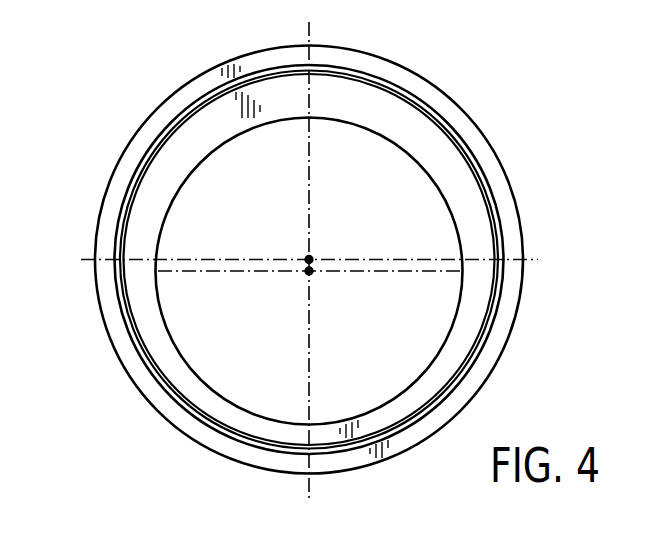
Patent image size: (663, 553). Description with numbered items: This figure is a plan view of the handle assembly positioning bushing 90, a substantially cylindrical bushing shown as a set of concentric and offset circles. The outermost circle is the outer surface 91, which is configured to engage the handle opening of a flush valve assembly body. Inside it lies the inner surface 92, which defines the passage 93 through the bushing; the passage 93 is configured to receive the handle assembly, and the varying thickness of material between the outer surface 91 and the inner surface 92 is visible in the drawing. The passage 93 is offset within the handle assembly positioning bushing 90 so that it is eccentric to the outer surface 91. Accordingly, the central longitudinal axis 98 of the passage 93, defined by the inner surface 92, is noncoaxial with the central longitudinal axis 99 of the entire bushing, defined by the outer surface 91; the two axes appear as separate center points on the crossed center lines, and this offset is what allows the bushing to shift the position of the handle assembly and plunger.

The handle assembly positioning bushing 90 is at (63, 390).
The outer surface 91 is at (208, 68).
The inner surface 92 is at (203, 155).
The passage 93 is at (338, 137).
The central longitudinal axis of the passage 98 is at (309, 271).
The central longitudinal axis of the handle assembly positioning bushing 99 is at (309, 259).